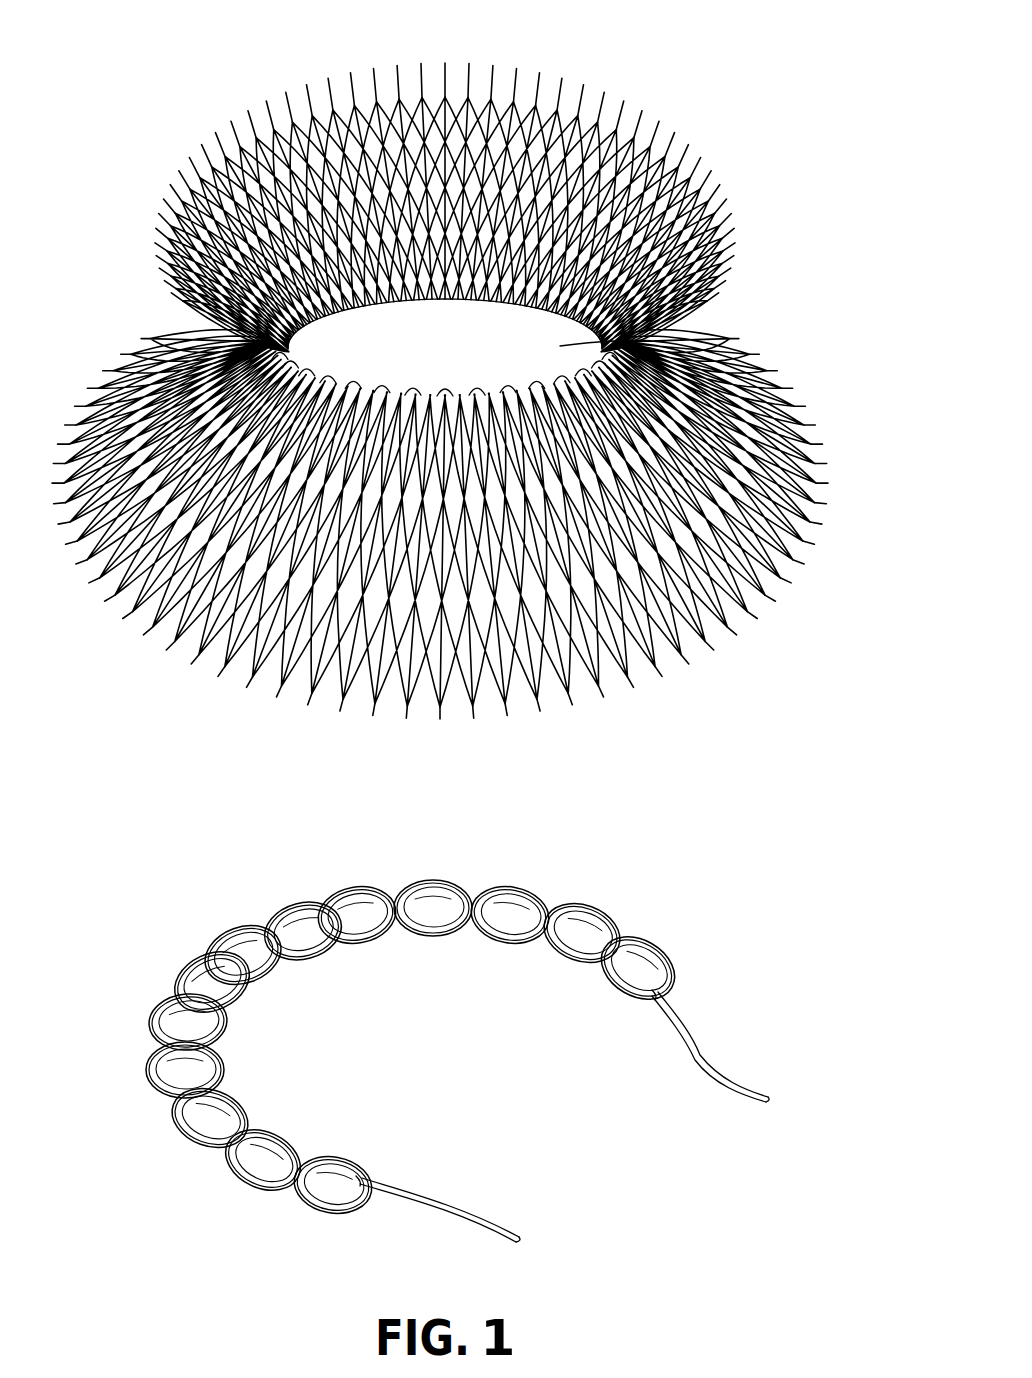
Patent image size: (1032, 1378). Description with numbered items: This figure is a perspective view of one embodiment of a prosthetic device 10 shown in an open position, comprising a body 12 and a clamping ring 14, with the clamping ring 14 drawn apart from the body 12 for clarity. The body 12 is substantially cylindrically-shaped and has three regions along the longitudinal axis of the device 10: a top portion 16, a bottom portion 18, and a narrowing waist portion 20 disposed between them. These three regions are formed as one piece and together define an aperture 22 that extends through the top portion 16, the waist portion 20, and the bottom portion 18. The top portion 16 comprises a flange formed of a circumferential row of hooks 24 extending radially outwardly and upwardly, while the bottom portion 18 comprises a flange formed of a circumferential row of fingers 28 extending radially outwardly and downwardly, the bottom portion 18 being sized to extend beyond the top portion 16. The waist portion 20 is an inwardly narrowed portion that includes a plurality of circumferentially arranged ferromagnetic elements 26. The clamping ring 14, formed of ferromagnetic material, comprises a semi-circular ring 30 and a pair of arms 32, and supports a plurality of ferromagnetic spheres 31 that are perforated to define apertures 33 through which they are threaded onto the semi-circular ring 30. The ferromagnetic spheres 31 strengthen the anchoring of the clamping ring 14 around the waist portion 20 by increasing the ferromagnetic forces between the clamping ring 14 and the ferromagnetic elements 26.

The device 10 is at (102, 44).
The body 12 is at (836, 299).
The clamping ring 14 is at (166, 899).
The top portion 16 is at (745, 213).
The bottom portion 18 is at (826, 470).
The waist portion 20 is at (734, 321).
The aperture 22 is at (357, 360).
The hooks 24 is at (398, 78).
The ferromagnetic elements 26 is at (412, 393).
The fingers 28 is at (367, 716).
The semi-circular ring 30 is at (280, 906).
The ferromagnetic spheres 31 is at (416, 1025).
The arms 32 is at (502, 1226).
The apertures 33 is at (380, 1183).